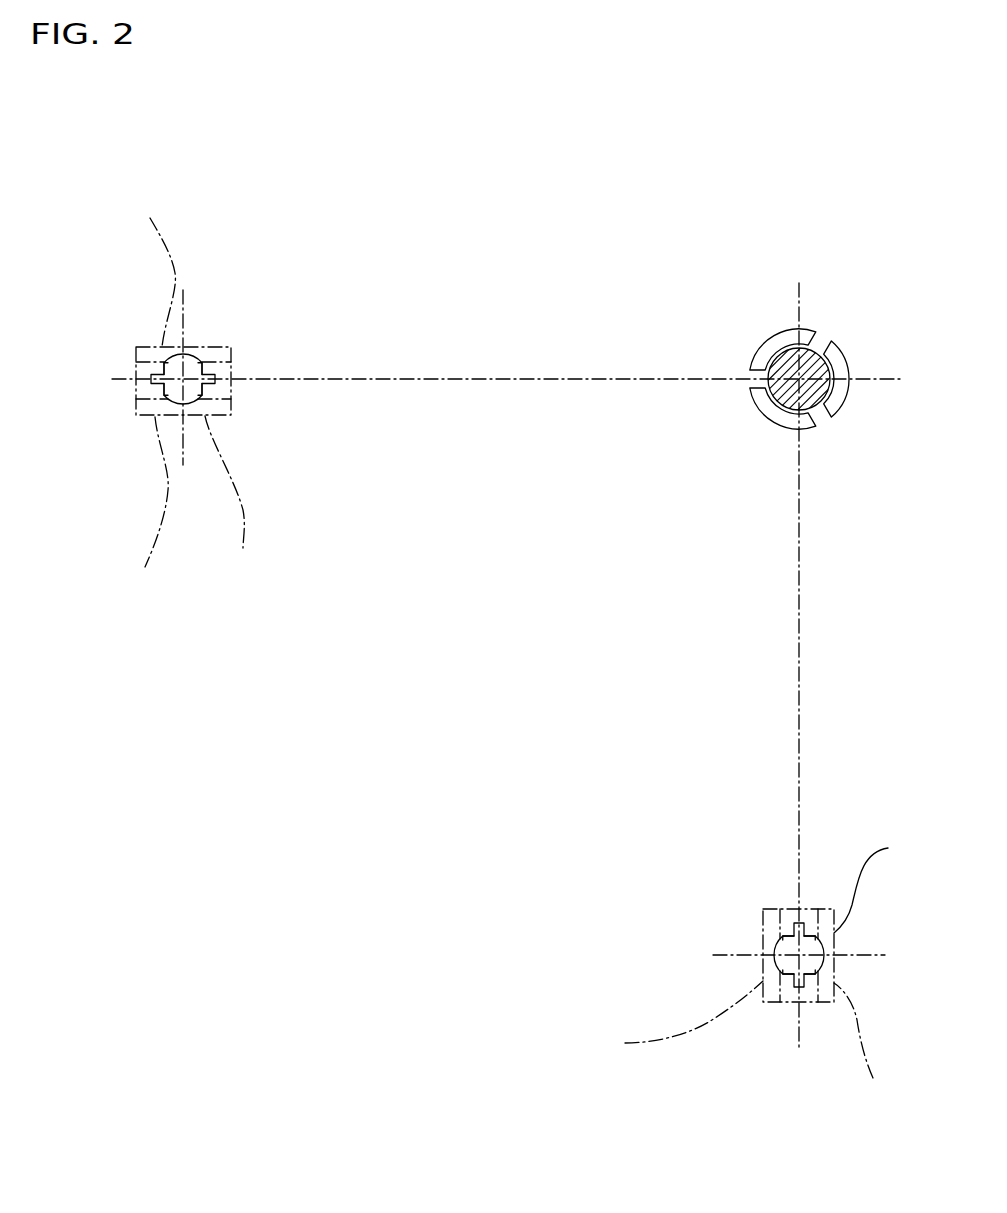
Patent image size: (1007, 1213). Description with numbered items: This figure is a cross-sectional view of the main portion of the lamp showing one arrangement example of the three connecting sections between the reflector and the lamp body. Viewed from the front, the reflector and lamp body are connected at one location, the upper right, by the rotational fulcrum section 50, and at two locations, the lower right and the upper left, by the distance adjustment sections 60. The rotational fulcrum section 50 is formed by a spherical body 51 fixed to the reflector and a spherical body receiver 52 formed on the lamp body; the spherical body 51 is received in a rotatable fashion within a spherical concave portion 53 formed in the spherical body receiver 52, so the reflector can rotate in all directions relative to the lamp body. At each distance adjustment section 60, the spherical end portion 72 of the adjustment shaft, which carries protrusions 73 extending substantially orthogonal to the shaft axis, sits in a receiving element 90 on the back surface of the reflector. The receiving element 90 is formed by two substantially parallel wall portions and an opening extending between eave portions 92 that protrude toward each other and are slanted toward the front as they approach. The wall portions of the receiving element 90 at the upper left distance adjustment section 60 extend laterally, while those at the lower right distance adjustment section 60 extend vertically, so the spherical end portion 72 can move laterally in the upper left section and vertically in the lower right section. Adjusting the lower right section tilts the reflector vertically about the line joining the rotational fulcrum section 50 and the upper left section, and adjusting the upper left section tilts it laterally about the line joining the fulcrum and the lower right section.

The rotational fulcrum section 50 is at (822, 284).
The spherical body 51 is at (778, 413).
The spherical body receiver 52 is at (845, 356).
The spherical concave portion 53 is at (778, 355).
The distance adjustment section 60 is at (272, 275).
The spherical end portion 72 is at (195, 358).
The protrusions 73 is at (164, 363).
The receiving element 90 is at (562, 674).
The eave portions 92 is at (513, 647).